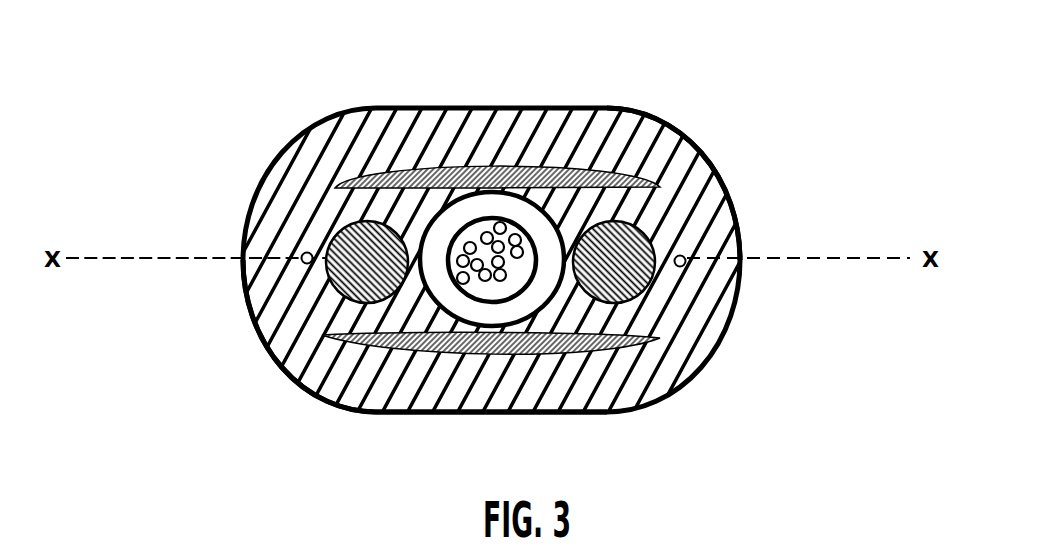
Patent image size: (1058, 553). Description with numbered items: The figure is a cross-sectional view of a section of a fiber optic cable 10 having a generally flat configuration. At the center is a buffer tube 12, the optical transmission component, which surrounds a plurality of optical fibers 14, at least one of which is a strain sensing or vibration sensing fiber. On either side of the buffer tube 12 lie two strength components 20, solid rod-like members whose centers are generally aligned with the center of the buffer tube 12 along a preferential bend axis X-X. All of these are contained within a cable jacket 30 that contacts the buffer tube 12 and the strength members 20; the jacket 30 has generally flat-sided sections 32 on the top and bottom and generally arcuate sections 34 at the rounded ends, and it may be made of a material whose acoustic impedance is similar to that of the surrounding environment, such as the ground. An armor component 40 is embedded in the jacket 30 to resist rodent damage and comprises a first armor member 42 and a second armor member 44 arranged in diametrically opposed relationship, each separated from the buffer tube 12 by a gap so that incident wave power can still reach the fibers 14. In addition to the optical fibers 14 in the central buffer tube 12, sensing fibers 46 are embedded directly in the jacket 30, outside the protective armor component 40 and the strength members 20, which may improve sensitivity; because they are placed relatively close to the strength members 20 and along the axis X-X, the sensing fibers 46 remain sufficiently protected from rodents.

The fiber optic cable 10 is at (746, 101).
The buffer tube 12 is at (444, 190).
The optical fibers 14 is at (500, 228).
The strength components 20 is at (330, 240).
The cable jacket 30 is at (726, 323).
The flat-sided sections 32 is at (562, 413).
The arcuate sections 34 is at (267, 348).
The armor component 40 is at (483, 140).
The first armor member 42 is at (352, 180).
The second armor member 44 is at (614, 361).
The sensing fibers 46 is at (303, 258).